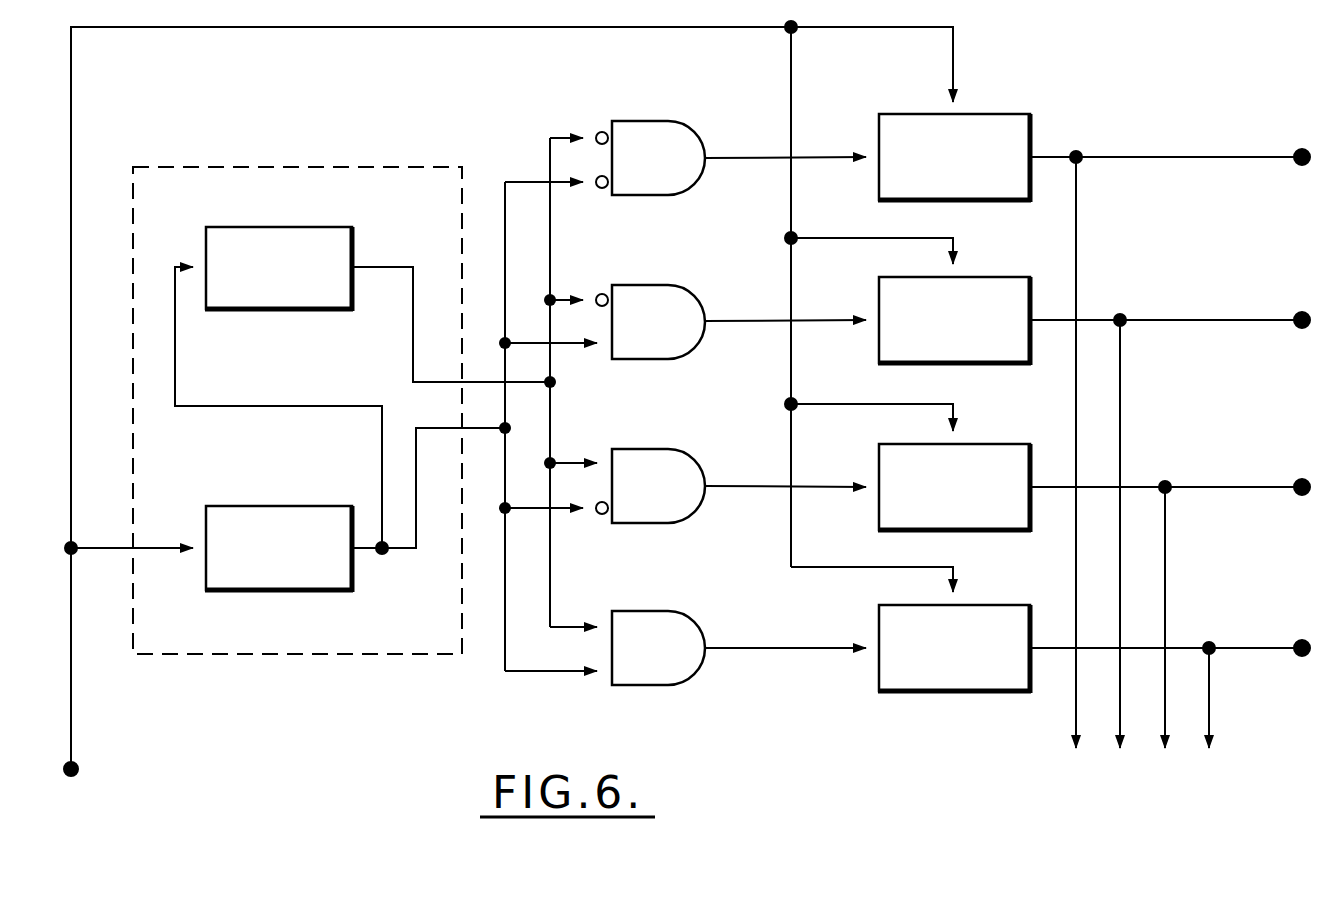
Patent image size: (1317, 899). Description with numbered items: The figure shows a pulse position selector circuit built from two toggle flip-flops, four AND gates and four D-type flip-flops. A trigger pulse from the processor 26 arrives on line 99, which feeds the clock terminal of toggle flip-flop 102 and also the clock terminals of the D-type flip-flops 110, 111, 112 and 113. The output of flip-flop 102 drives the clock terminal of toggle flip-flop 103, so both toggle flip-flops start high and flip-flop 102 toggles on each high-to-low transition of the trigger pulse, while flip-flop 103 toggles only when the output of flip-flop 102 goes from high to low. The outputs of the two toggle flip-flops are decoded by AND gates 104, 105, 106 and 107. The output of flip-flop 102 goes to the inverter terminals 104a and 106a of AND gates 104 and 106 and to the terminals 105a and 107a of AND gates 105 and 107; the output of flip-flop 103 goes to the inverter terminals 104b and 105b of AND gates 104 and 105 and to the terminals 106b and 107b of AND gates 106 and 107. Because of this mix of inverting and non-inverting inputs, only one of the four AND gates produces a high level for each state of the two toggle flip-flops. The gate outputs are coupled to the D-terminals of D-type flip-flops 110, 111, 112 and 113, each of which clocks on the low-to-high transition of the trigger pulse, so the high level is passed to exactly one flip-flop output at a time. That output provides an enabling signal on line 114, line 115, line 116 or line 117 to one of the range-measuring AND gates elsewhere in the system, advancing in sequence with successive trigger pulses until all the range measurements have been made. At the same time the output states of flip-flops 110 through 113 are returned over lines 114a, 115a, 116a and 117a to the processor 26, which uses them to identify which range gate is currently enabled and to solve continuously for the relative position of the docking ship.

The line 99 is at (71, 569).
The toggle flip-flop 102 is at (259, 590).
The toggle flip-flop 103 is at (243, 228).
The AND gate 104 is at (683, 126).
The inverter terminal 104a is at (598, 188).
The inverter terminal 104b is at (596, 130).
The AND gate 105 is at (690, 288).
The terminal 105a is at (606, 349).
The inverter terminal 105b is at (598, 293).
The AND gate 106 is at (739, 473).
The inverter terminal 106a is at (598, 514).
The terminal 106b is at (606, 460).
The AND gate 107 is at (690, 622).
The terminal 107a is at (606, 676).
The terminal 107b is at (606, 623).
The D-type flip-flop 110 is at (890, 120).
The D-type flip-flop 111 is at (996, 278).
The D-type flip-flop 112 is at (1004, 445).
The D-type flip-flop 113 is at (998, 610).
The line 114 is at (1105, 157).
The line 114a is at (1076, 236).
The line 115 is at (1166, 320).
The line 115a is at (1120, 402).
The line 116 is at (1206, 487).
The line 116a is at (1165, 540).
The line 117 is at (1226, 648).
The line 117a is at (1209, 696).
The processor 26 is at (1123, 851).